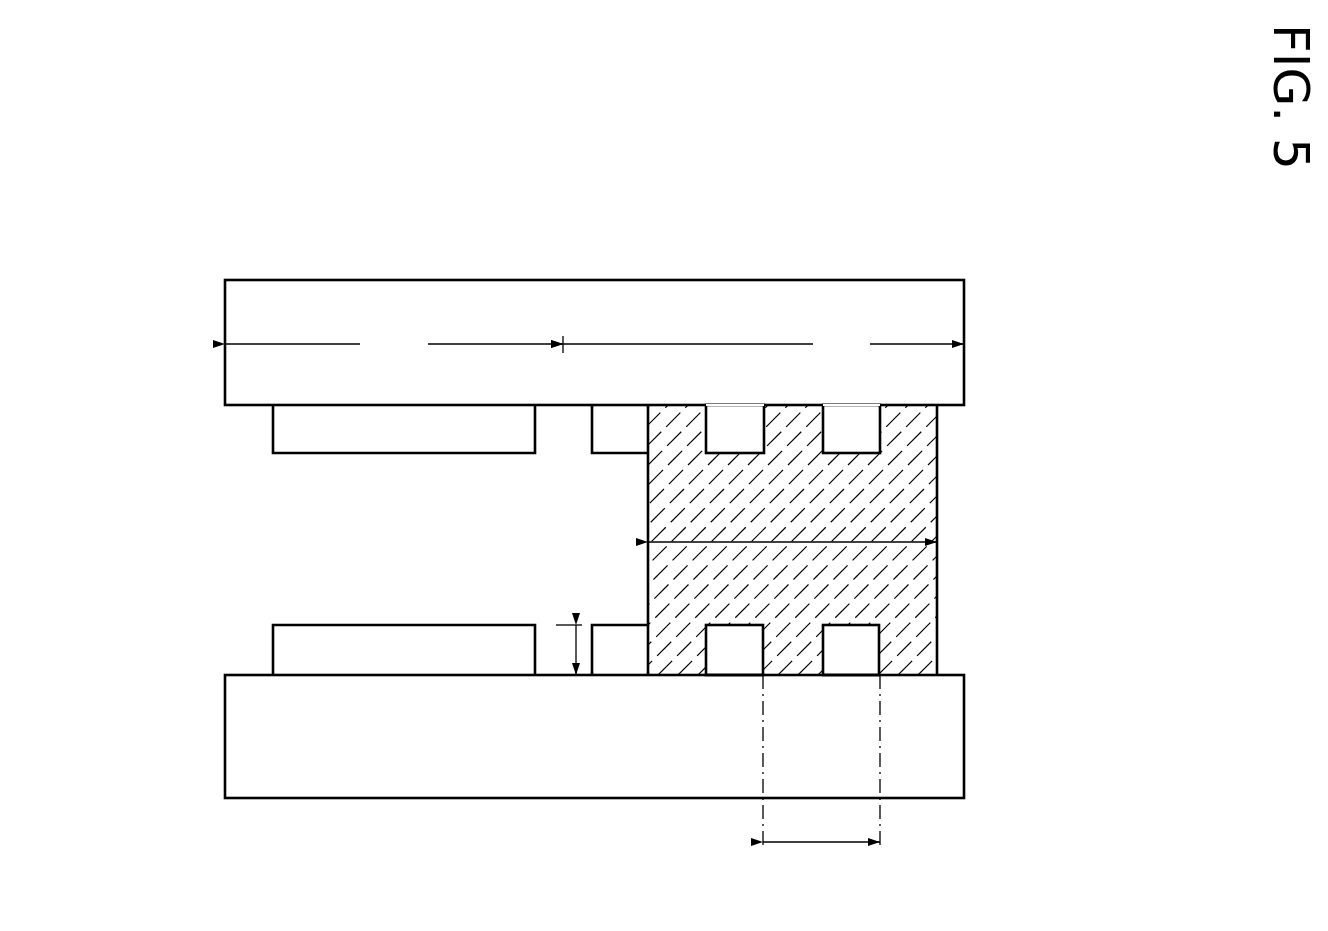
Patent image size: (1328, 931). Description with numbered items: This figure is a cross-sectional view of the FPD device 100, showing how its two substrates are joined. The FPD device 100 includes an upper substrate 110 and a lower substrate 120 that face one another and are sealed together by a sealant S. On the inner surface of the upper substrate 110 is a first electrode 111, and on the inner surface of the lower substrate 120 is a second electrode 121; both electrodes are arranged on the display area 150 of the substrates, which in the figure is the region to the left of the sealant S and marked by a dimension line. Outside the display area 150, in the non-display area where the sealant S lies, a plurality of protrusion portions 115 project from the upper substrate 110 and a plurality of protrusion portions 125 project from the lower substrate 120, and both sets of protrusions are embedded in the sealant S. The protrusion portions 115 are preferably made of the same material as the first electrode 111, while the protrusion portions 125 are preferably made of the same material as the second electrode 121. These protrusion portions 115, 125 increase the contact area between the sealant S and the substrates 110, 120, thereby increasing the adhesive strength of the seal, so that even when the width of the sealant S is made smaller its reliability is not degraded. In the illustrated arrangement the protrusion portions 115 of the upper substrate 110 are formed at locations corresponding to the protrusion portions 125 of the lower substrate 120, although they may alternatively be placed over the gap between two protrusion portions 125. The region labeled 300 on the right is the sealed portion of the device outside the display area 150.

The FPD device 100 is at (648, 228).
The upper substrate 110 is at (482, 292).
The first electrode 111 is at (411, 446).
The protrusion portions 115 is at (732, 425).
The lower substrate 120 is at (593, 783).
The second electrode 121 is at (409, 632).
The protrusion portions 125 is at (728, 663).
The display area 150 is at (394, 345).
The second region (bonding region) 300 is at (763, 345).
The sealant S is at (936, 590).